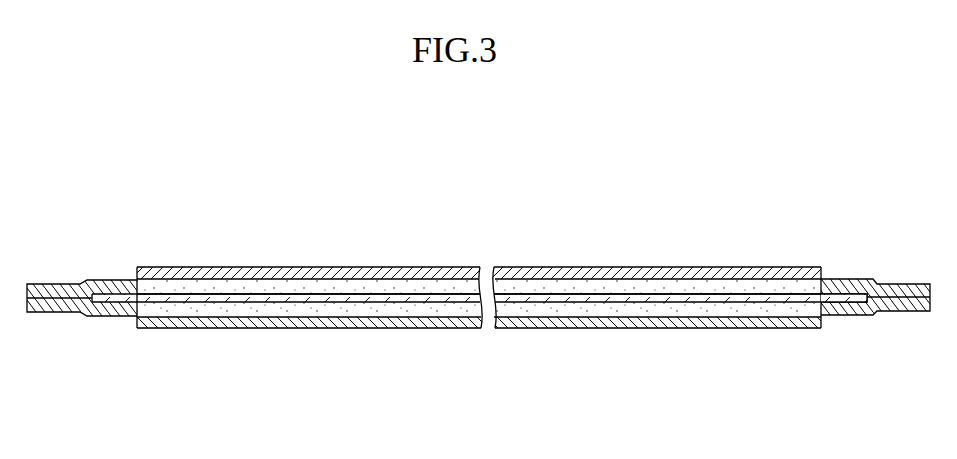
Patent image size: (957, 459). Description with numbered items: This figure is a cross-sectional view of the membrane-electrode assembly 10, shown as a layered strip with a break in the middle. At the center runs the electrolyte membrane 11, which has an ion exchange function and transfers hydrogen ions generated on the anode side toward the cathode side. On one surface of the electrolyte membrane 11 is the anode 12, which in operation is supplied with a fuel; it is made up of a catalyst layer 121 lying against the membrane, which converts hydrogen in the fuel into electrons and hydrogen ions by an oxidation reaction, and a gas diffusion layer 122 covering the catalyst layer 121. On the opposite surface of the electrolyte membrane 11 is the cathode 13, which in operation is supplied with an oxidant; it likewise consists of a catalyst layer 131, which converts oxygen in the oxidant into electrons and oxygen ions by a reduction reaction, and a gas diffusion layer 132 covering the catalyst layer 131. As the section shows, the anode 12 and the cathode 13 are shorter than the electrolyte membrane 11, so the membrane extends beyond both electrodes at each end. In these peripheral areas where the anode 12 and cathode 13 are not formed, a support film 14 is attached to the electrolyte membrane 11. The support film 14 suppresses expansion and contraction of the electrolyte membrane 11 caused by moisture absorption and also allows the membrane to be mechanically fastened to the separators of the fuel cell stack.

The membrane-electrode assembly 10 is at (478, 289).
The electrolyte membrane 11 is at (663, 300).
The anode 12 is at (479, 234).
The catalyst layer 121 is at (335, 208).
The gas diffusion layer 122 is at (353, 278).
The cathode 13 is at (479, 362).
The catalyst layer 131 is at (403, 308).
The gas diffusion layer 132 is at (428, 386).
The support film 14 is at (897, 295).